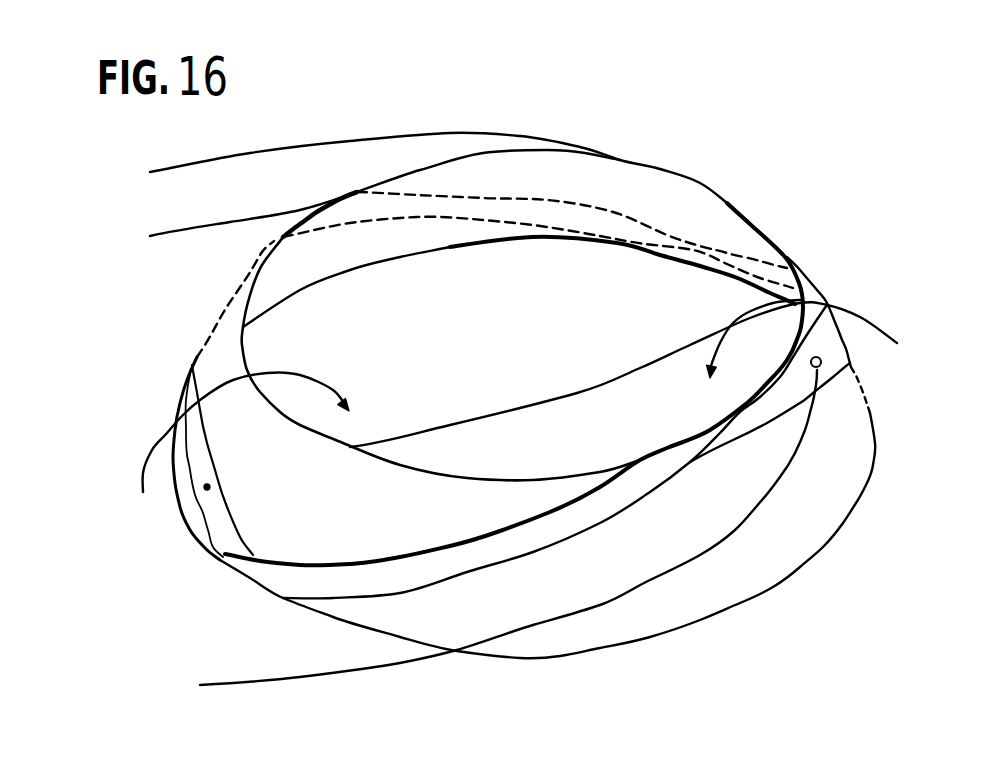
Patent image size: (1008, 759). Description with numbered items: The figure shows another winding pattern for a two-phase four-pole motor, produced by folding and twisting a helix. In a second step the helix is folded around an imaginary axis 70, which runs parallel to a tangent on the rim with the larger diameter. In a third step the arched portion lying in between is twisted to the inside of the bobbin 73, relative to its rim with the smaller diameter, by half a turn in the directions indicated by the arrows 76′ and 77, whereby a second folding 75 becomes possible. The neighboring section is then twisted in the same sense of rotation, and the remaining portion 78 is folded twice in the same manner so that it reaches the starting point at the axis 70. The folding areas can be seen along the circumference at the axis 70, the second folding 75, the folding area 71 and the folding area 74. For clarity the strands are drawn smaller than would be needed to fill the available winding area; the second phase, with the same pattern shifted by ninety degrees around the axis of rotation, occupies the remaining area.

The imaginary axis 70 is at (240, 578).
The folding area 71 is at (693, 261).
The bobbin 73 is at (150, 172).
The folding area 74 is at (150, 236).
The second folding 75 is at (697, 435).
The arrow 76′ is at (143, 473).
The arrow 77 is at (350, 447).
The rear loop 78 is at (200, 685).